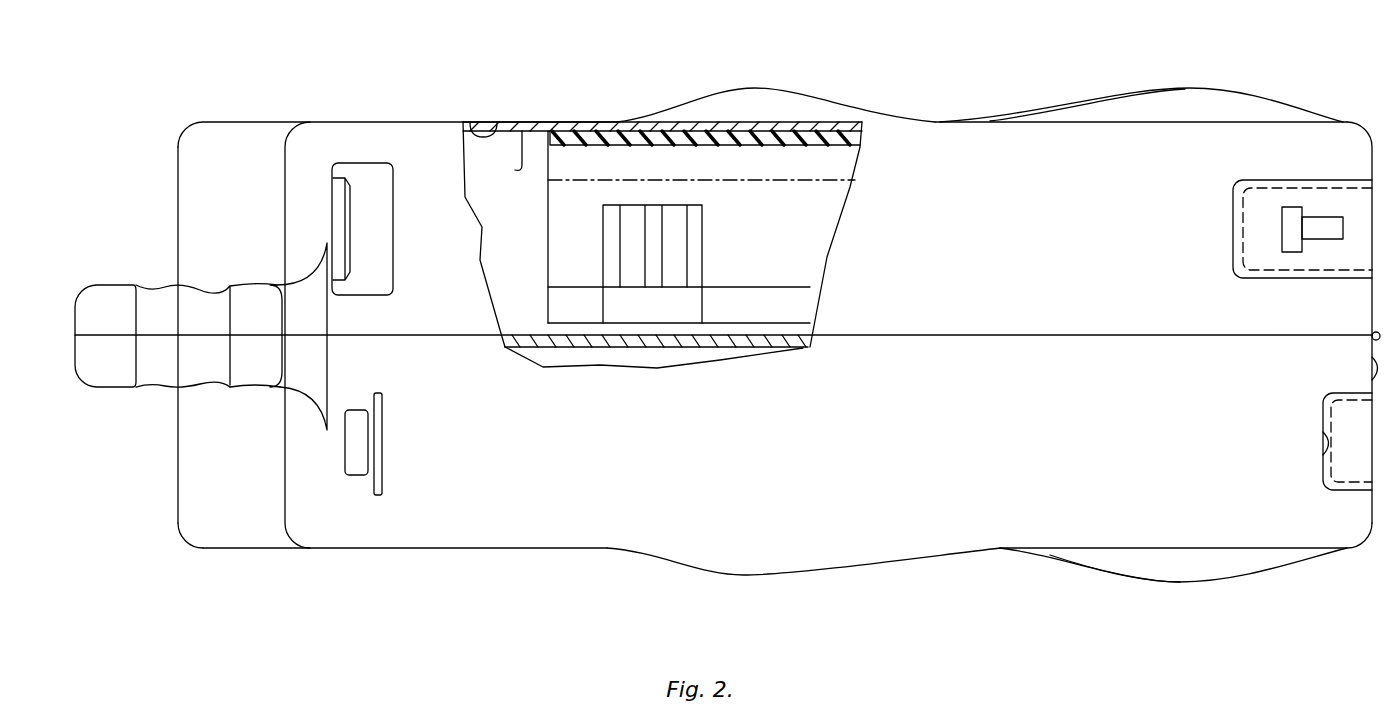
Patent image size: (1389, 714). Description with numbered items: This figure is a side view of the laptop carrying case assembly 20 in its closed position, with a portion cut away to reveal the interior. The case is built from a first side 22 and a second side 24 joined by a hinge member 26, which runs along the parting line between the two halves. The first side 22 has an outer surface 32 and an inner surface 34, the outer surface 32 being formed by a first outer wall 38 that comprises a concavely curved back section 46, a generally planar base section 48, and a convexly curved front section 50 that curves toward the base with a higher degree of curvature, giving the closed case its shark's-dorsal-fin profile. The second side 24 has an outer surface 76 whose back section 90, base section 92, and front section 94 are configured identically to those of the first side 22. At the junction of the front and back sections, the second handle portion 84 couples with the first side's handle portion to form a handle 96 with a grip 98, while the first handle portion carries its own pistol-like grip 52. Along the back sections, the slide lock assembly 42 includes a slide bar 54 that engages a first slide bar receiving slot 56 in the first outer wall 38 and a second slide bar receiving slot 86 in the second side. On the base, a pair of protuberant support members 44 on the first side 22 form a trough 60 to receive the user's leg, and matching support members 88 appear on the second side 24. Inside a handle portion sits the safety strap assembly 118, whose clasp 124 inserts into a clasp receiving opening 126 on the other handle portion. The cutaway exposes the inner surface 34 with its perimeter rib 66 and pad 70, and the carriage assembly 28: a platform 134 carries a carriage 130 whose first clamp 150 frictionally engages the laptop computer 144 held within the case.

The laptop carrying case assembly 20 is at (618, 44).
The first side 22 is at (197, 137).
The second side 24 is at (217, 537).
The hinge member 26 is at (1378, 325).
The carriage assembly 28 is at (534, 303).
The outer surface 32 is at (345, 130).
The inner surface 34 is at (490, 137).
The first outer wall 38 is at (263, 122).
The slide lock assembly 42 is at (1232, 265).
The support members 44 is at (755, 100).
The back section 46 is at (1030, 213).
The base section 48 is at (1378, 148).
The front section 50 is at (188, 185).
The grip 52 is at (222, 300).
The slide bar 54 is at (1295, 213).
The first slide bar receiving slot 56 is at (1240, 227).
The trough 60 is at (1097, 105).
The perimeter rib 66 is at (518, 170).
The pad 70 is at (610, 137).
The outer surface 76 is at (467, 527).
The second handle portion 84 is at (260, 372).
The second slide bar receiving slot 86 is at (1330, 440).
The support members 88 is at (767, 562).
The back section 90 is at (846, 443).
The base section 92 is at (1370, 377).
The front section 94 is at (193, 495).
The handle 96 is at (90, 362).
The grip 98 is at (163, 373).
The safety strap assembly 118 is at (405, 221).
The clasp 124 is at (343, 205).
The clasp receiving opening 126 is at (380, 453).
The carriage 130 is at (785, 297).
The platform 134 is at (648, 338).
The laptop computer 144 is at (825, 200).
The first clamp 150 is at (613, 223).